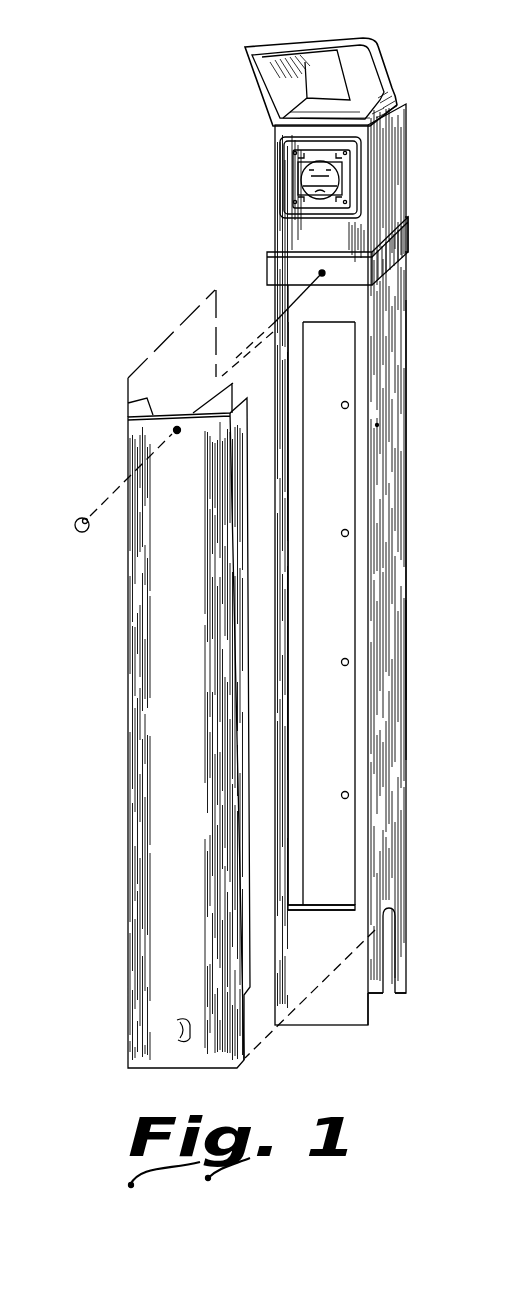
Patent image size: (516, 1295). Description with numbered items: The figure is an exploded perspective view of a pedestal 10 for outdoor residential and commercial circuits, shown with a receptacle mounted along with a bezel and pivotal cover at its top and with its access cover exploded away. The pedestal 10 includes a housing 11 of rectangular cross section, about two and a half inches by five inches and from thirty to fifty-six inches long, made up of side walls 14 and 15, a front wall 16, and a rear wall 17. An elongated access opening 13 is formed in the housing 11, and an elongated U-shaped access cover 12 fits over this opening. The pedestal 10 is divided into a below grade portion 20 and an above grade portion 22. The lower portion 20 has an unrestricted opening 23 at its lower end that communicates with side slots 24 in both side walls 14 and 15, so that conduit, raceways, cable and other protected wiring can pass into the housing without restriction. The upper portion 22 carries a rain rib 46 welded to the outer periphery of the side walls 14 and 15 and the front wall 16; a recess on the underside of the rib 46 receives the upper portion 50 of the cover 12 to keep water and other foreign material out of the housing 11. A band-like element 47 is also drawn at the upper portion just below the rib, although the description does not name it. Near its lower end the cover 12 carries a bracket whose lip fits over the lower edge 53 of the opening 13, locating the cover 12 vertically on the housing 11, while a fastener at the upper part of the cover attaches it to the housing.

The pedestal 10 is at (408, 487).
The housing 11 is at (388, 600).
The access cover 12 is at (160, 685).
The access opening 13 is at (357, 688).
The side wall 14 is at (297, 364).
The side wall 15 is at (388, 423).
The front wall 16 is at (340, 307).
The rear wall 17 is at (337, 503).
The below grade portion 20 is at (408, 669).
The above grade portion 22 is at (263, 214).
The unrestricted opening 23 is at (384, 1000).
The side slots 24 is at (398, 945).
The rain rib 46 is at (410, 238).
The collar band 47 is at (275, 267).
The upper portion of the cover 50 is at (511, 224).
The lower edge of opening 53 is at (328, 905).